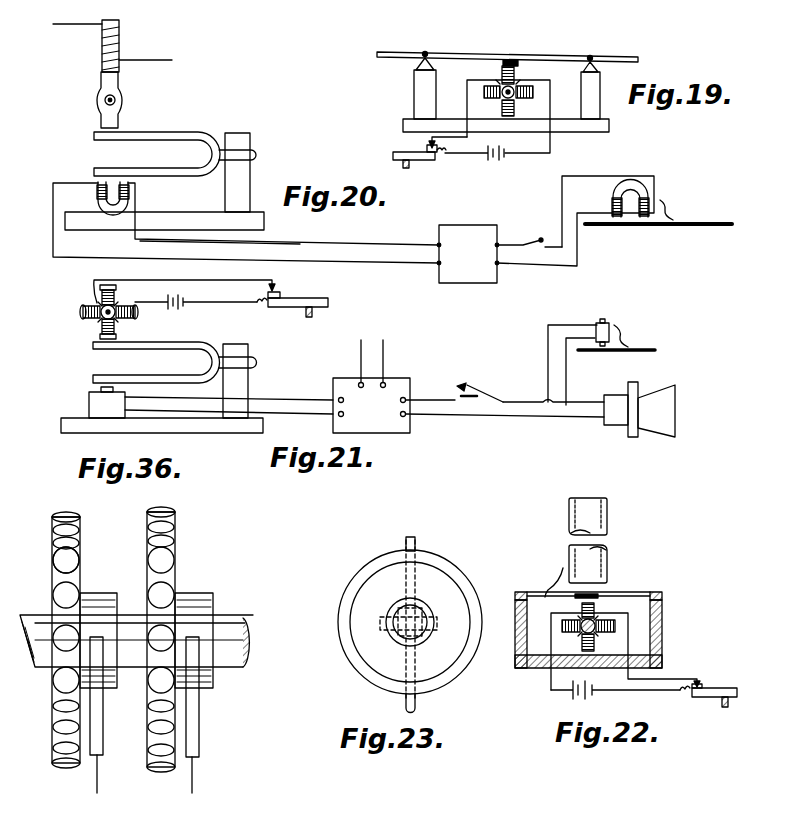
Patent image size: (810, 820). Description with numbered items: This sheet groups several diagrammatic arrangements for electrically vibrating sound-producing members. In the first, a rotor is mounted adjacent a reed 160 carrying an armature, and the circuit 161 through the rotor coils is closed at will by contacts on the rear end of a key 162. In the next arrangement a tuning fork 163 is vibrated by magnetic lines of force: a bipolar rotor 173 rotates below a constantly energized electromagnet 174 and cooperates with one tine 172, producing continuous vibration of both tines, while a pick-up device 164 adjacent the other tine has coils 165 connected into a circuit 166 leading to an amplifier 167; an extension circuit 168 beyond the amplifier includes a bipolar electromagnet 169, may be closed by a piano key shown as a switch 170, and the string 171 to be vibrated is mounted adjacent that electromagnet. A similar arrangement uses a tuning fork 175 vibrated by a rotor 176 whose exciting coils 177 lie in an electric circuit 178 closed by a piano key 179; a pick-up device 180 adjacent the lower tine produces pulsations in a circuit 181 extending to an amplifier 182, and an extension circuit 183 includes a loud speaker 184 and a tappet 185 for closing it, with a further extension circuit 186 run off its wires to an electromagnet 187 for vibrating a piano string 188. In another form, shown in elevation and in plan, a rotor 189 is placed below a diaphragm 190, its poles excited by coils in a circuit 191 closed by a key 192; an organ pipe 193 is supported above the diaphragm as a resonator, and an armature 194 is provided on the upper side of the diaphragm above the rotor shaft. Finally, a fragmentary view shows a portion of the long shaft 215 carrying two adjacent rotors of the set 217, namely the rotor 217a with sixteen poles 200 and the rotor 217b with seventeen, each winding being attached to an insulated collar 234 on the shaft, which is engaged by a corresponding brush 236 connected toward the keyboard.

In FIG. 19, the reed 160 is at (575, 40).
In FIG. 19, the circuit 161 is at (550, 146).
In FIG. 19, the key 162 is at (421, 164).
In FIG. 20, the tuning fork 163 is at (214, 119).
In FIG. 20, the pick-up device 164 is at (98, 190).
In FIG. 20, the coils 165 is at (129, 190).
In FIG. 20, the circuit 166 is at (418, 229).
In FIG. 20, the amplifier 167 is at (488, 210).
In FIG. 20, the extension circuit 168 is at (640, 163).
In FIG. 20, the bipolar electromagnet 169 is at (613, 192).
In FIG. 20, the switch 170 is at (543, 240).
In FIG. 20, the string 171 is at (693, 231).
In FIG. 20, the tine 172 is at (160, 117).
In FIG. 20, the bipolar rotor 173 is at (110, 82).
In FIG. 20, the electromagnet 174 is at (119, 44).
In FIG. 21, the tuning fork 175 is at (199, 341).
In FIG. 21, the rotor 176 is at (96, 322).
In FIG. 21, the exciting coils 177 is at (97, 305).
In FIG. 21, the electric circuit 178 is at (256, 272).
In FIG. 21, the piano key 179 is at (314, 293).
In FIG. 21, the pick-up device 180 is at (89, 406).
In FIG. 21, the circuit 181 is at (307, 386).
In FIG. 21, the amplifier 182 is at (371, 386).
In FIG. 21, the extension circuit 183 is at (513, 419).
In FIG. 21, the loud speaker 184 is at (672, 406).
In FIG. 21, the tappet 185 is at (481, 394).
In FIG. 21, the extension circuit 186 is at (548, 346).
In FIG. 21, the electromagnet 187 is at (613, 306).
In FIG. 21, the piano string 188 is at (641, 349).
In FIG. 23, the rotor 189 is at (378, 620).
In FIG. 22, the rotor 189 is at (594, 633).
In FIG. 23, the diaphragm 190 is at (368, 647).
In FIG. 22, the diaphragm 190 is at (640, 584).
In FIG. 22, the circuit 191 is at (551, 689).
In FIG. 22, the key 192 is at (730, 681).
In FIG. 23, the organ pipe 193 is at (426, 642).
In FIG. 22, the organ pipe 193 is at (607, 518).
In FIG. 23, the armature 194 is at (420, 614).
In FIG. 22, the armature 194 is at (605, 596).
In FIG. 36, the poles 200 is at (60, 558).
In FIG. 36, the long shaft 215 is at (228, 626).
In FIG. 36, the set of rotors 217 is at (96, 547).
In FIG. 36, the rotor 217a is at (50, 526).
In FIG. 36, the rotor 217b is at (176, 518).
In FIG. 36, the insulated collar 234 is at (96, 602).
In FIG. 36, the brush 236 is at (97, 750).